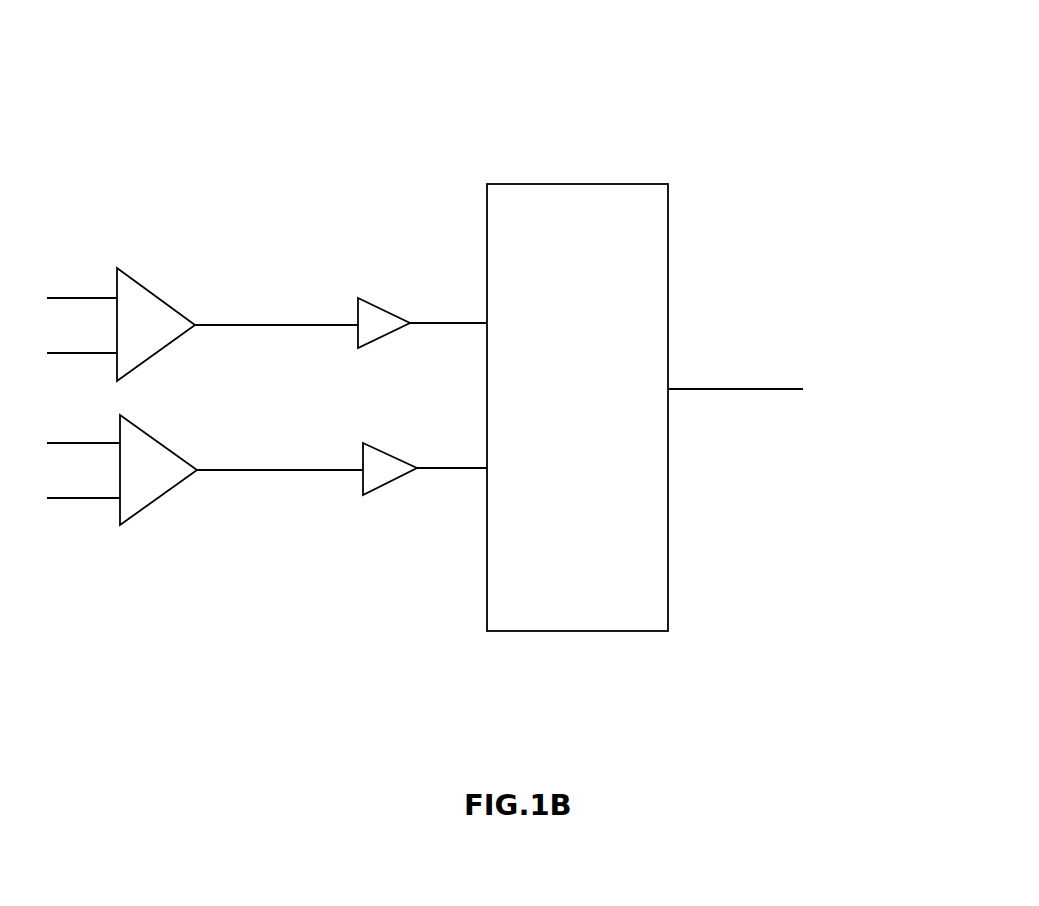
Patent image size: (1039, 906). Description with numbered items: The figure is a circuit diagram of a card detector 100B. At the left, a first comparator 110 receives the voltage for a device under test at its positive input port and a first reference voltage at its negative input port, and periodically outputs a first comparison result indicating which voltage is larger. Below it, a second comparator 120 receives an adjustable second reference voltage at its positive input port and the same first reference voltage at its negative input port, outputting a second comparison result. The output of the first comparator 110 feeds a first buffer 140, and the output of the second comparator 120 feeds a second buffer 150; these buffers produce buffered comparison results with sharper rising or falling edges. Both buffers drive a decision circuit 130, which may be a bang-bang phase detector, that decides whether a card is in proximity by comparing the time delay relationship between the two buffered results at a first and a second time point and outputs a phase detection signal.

The card detector 100B is at (862, 89).
The first comparator 110 is at (143, 290).
The second comparator 120 is at (150, 437).
The decision circuit 130 is at (668, 279).
The first buffer 140 is at (362, 298).
The second buffer 150 is at (367, 443).